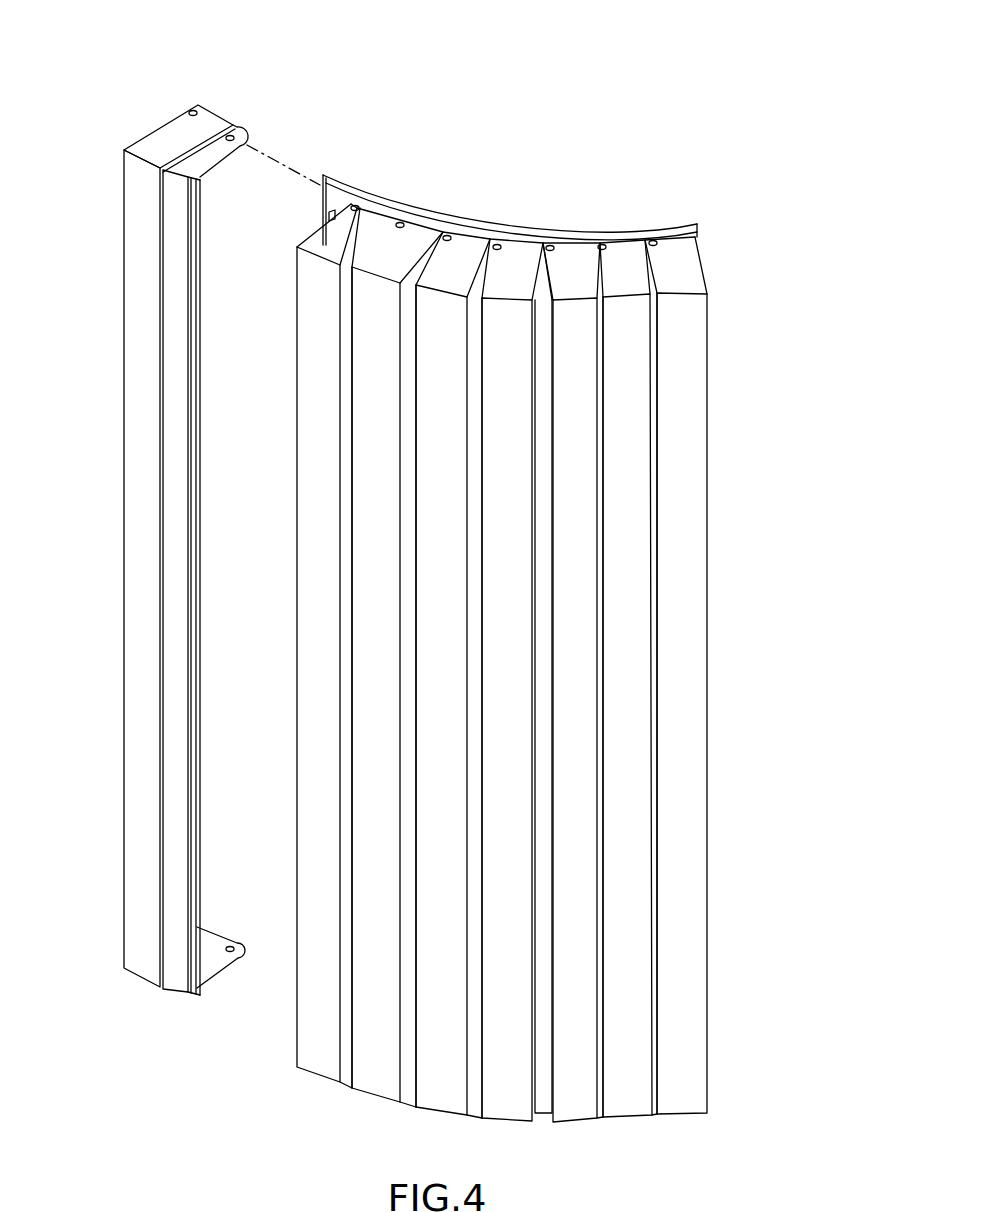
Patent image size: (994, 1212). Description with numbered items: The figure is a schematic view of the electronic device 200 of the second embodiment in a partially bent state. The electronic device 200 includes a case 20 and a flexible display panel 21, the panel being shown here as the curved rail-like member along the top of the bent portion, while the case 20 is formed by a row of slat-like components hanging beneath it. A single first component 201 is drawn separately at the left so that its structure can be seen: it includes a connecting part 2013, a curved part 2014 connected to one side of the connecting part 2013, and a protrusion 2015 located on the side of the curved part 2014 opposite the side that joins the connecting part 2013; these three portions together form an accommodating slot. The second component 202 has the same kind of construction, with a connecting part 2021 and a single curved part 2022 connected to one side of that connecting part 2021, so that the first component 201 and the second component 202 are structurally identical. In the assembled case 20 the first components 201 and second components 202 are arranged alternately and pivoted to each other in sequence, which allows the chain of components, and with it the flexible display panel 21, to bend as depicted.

The case 20 is at (210, 40).
The electronic device 200 is at (723, 122).
The first component 201 is at (208, 130).
The second component 202 is at (366, 216).
The flexible display panel 21 is at (605, 231).
The connecting part 2013 is at (133, 962).
The curved part 2014 is at (177, 970).
The protrusion 2015 is at (199, 991).
The connecting part 2021 is at (308, 1052).
The curved part 2022 is at (352, 1060).